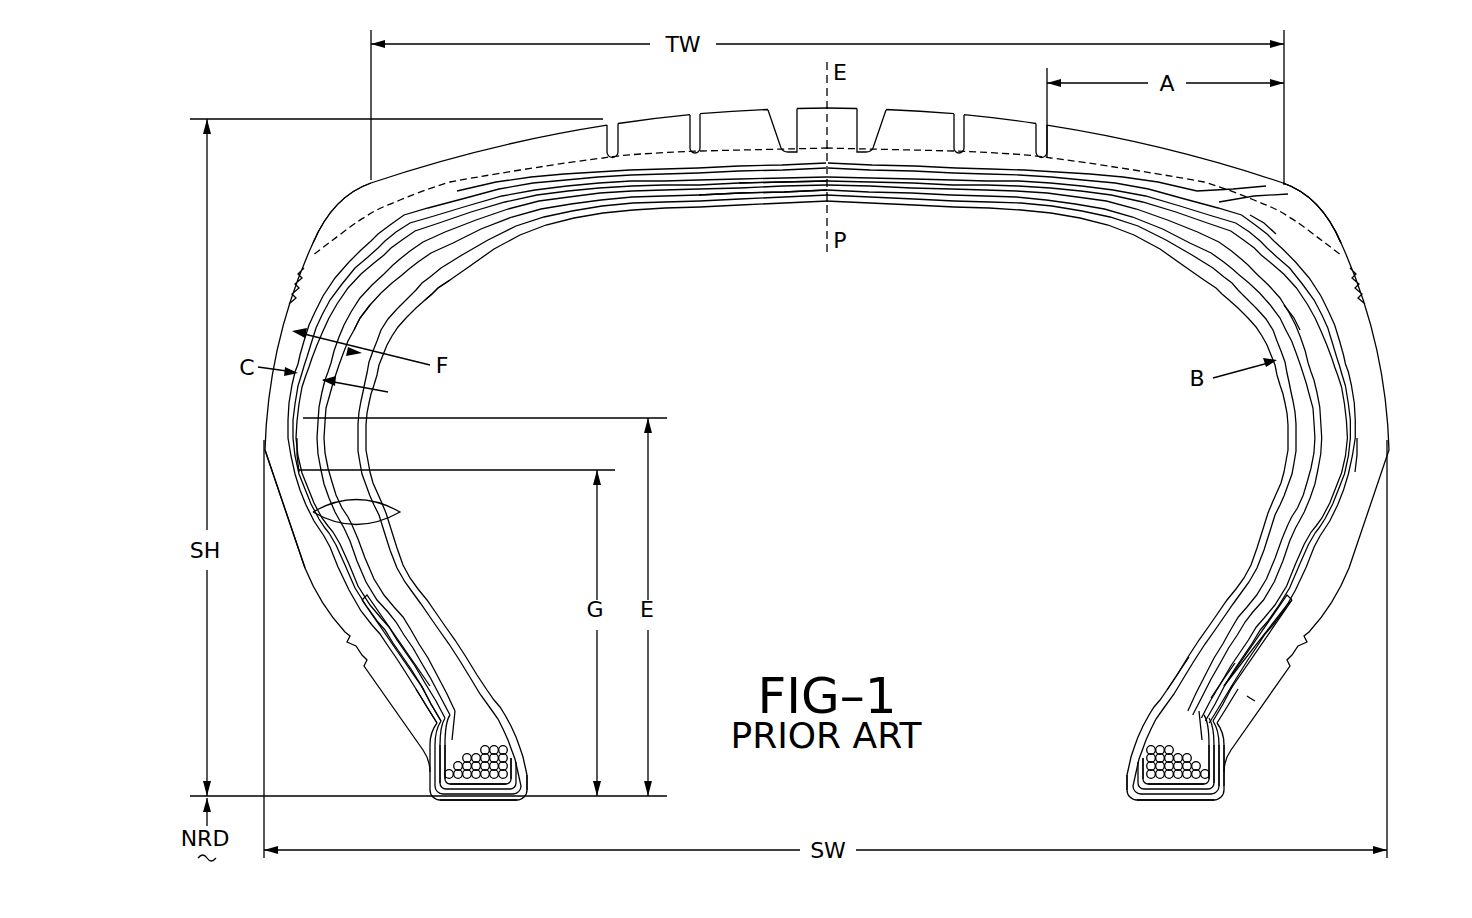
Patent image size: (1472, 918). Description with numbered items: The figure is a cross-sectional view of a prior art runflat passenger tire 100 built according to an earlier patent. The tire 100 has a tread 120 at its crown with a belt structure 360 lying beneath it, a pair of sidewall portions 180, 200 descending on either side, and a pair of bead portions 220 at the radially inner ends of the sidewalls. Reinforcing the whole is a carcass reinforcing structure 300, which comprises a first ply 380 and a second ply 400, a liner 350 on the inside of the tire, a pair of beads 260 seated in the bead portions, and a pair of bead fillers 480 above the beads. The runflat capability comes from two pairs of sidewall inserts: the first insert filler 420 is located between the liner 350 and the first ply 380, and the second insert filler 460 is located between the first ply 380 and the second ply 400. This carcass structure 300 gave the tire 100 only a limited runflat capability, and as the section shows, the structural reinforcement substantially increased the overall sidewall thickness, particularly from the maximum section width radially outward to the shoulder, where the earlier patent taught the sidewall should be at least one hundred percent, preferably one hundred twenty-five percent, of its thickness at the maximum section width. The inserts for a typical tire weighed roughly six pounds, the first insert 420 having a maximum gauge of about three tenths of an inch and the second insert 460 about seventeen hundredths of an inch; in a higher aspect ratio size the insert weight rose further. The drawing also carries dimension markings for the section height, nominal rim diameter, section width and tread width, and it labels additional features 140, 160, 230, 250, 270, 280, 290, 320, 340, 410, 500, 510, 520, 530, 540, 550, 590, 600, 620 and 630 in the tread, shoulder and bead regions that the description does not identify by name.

The tire 100 is at (1350, 122).
The tread 120 is at (988, 135).
The tread edge 140 is at (1291, 184).
The tread edge 160 is at (366, 181).
The sidewall portion 180 is at (272, 353).
The sidewall portion 200 is at (1385, 388).
The bead portion 220 is at (443, 673).
The bead portion 230 is at (505, 772).
The carcass turn-up 250 is at (450, 760).
The bead 260 is at (490, 755).
The bead base 270 is at (477, 776).
The bead toe 280 is at (515, 790).
The bead heel 290 is at (428, 787).
The carcass reinforcing structure 300 is at (906, 200).
The chafer 320 is at (402, 660).
The flipper 340 is at (428, 690).
The liner 350 is at (415, 283).
The belt structure 360 is at (926, 166).
The first ply 380 is at (365, 293).
The second ply 400 is at (352, 263).
The apex 410 is at (400, 512).
The first insert filler 420 is at (399, 566).
The second insert filler 460 is at (315, 456).
The bead filler 480 is at (383, 607).
The belt edge strip 500 is at (1203, 205).
The belt edge cushion 510 is at (1285, 232).
The chafer end 520 is at (1278, 690).
The ply turn-up end 530 is at (1250, 650).
The toe guard 540 is at (1205, 760).
The rim strip 550 is at (1290, 610).
The belt edge gum strip 590 is at (1176, 190).
The chipper 600 is at (417, 715).
The inner liner 620 is at (1160, 708).
The bead filler 630 is at (1225, 735).